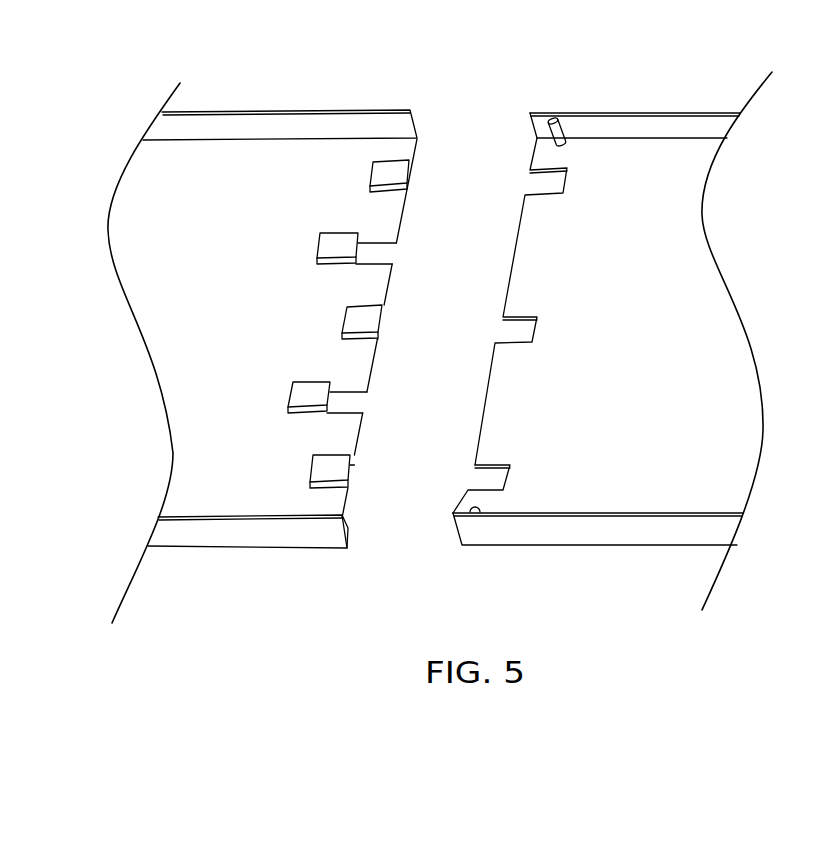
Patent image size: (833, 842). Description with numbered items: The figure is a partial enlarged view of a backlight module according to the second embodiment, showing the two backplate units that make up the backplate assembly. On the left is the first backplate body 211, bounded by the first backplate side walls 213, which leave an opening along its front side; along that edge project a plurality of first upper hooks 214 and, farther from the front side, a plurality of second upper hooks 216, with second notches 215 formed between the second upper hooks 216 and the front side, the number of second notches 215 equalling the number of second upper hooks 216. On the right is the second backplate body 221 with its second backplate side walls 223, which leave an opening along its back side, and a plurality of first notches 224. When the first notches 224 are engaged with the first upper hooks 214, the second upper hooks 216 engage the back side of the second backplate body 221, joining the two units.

The first backplate body 211 is at (203, 405).
The first backplate side walls 213 is at (140, 522).
The first upper hooks 214 is at (327, 468).
The second notches 215 is at (338, 403).
The second upper hooks 216 is at (302, 392).
The second backplate body 221 is at (708, 315).
The second backplate side walls 223 is at (622, 527).
The first notches 224 is at (490, 477).